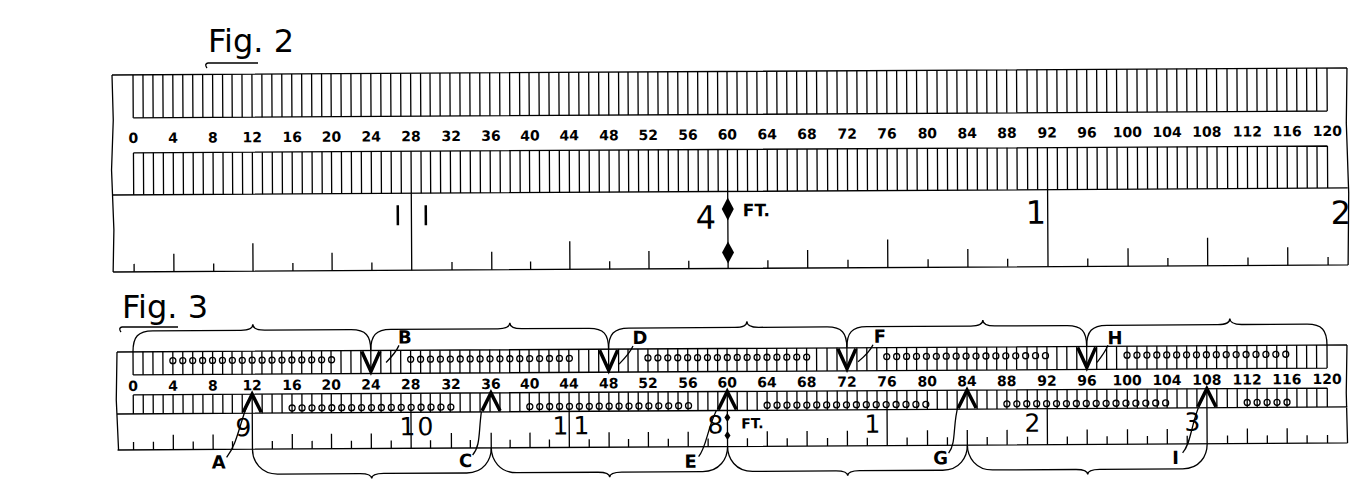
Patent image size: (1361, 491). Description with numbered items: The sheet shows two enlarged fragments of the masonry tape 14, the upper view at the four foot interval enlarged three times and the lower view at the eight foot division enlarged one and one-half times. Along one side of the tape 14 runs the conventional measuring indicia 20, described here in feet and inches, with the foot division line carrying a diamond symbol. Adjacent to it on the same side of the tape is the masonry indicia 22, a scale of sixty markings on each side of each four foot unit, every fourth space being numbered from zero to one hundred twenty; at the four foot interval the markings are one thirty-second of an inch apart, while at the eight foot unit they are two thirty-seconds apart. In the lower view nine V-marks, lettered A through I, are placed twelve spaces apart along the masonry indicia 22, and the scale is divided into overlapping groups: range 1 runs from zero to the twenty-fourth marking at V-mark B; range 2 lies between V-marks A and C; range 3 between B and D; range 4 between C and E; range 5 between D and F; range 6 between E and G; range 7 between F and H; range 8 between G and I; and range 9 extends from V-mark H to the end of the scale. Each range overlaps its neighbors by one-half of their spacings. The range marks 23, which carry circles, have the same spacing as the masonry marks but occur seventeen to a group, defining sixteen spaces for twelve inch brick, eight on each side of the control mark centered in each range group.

In FIG. 2, the masonry tape 14 is at (880, 73).
In FIG. 2, the conventional measuring indicia 20 is at (1047, 256).
In FIG. 3, the conventional measuring indicia 20 is at (590, 447).
In FIG. 2, the masonry indicia 22 is at (712, 75).
In FIG. 3, the masonry indicia 22 is at (182, 407).
In FIG. 3, the range marks 23 is at (308, 362).
In FIG. 3, the range 1 is at (252, 328).
In FIG. 3, the range 2 is at (371, 469).
In FIG. 3, the range 3 is at (490, 326).
In FIG. 3, the range 4 is at (609, 468).
In FIG. 3, the range 5 is at (727, 325).
In FIG. 3, the range 6 is at (848, 468).
In FIG. 3, the range 7 is at (967, 323).
In FIG. 3, the range 8 is at (1087, 467).
In FIG. 3, the range 9 is at (1206, 322).